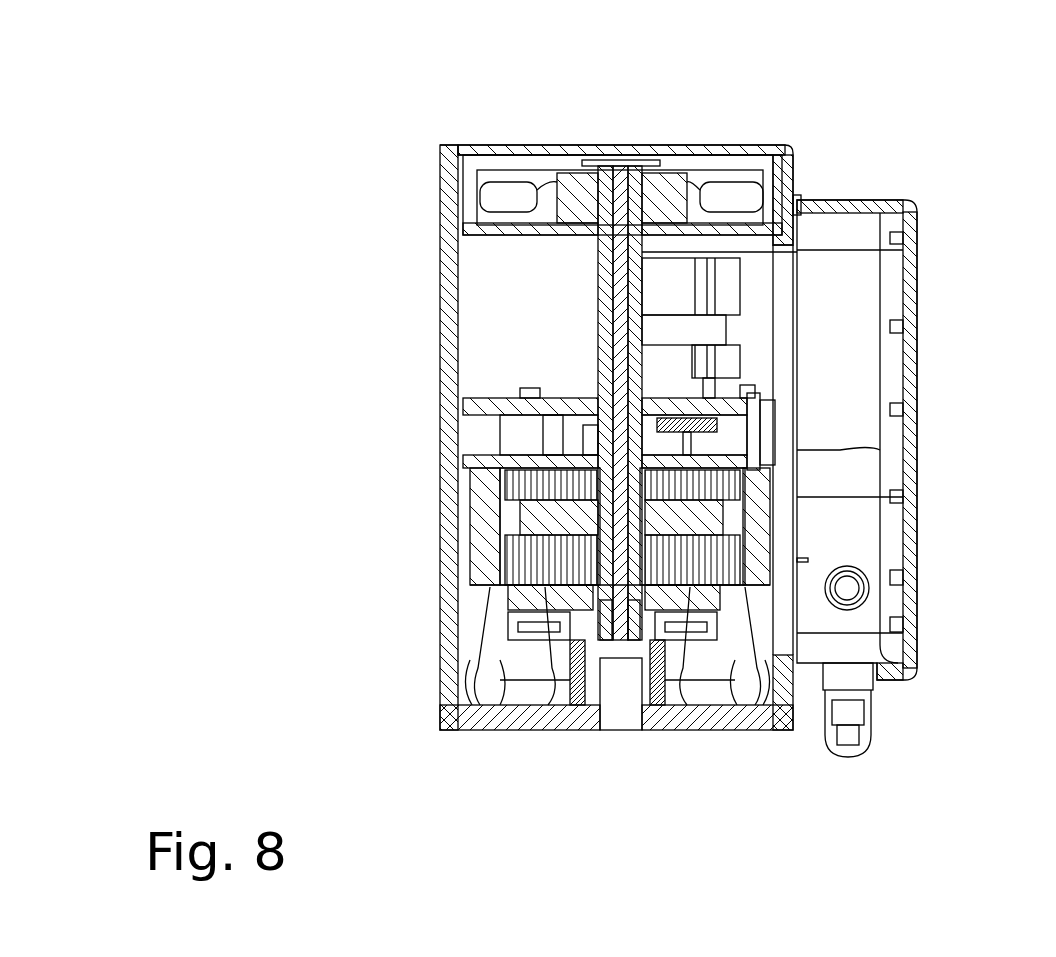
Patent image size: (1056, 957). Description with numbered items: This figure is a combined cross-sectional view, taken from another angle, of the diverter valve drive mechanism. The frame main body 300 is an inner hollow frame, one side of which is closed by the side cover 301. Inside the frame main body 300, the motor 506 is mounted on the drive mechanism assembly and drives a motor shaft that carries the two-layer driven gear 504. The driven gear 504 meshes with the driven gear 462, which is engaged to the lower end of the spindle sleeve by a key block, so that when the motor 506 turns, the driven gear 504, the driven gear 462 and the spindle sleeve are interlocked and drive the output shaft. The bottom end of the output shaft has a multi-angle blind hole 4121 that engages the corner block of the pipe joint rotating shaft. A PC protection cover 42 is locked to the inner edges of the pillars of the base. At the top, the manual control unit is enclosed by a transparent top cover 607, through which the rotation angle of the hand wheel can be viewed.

The frame main body 300 is at (445, 280).
The transparent top cover 607 is at (720, 147).
The motor 506 is at (740, 290).
The driven gear 504 is at (735, 427).
The driven gear 462 is at (525, 420).
The PC protection cover 42 is at (545, 630).
The multi-angle blind hole 4121 is at (620, 715).
The side cover 301 is at (912, 530).